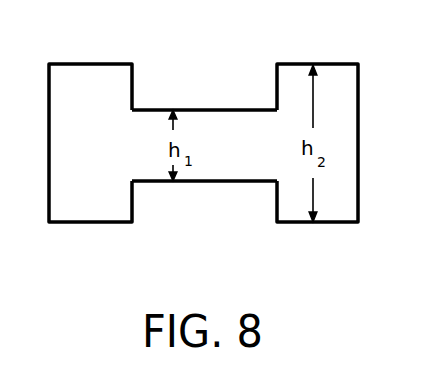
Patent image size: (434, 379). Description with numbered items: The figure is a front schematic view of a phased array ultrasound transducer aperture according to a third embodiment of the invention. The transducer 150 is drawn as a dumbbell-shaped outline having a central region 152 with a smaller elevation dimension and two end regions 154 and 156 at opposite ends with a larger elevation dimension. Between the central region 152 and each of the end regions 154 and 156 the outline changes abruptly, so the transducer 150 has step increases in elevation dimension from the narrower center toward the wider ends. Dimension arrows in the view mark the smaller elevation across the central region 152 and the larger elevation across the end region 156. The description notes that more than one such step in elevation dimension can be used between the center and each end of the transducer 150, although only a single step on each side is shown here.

The transducer 150 is at (203, 144).
The central region 152 is at (210, 109).
The end region 154 is at (105, 63).
The end region 156 is at (332, 63).